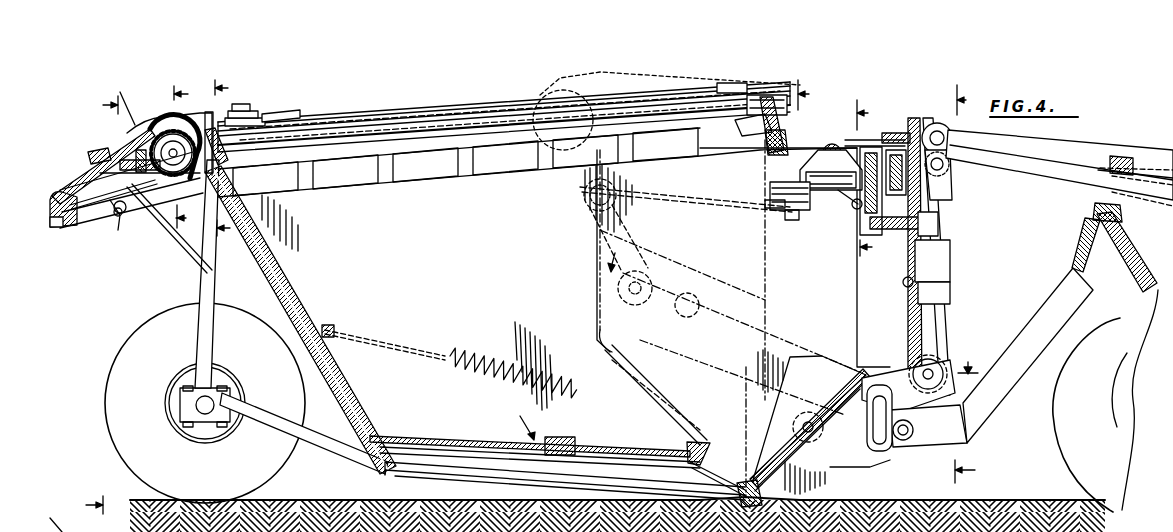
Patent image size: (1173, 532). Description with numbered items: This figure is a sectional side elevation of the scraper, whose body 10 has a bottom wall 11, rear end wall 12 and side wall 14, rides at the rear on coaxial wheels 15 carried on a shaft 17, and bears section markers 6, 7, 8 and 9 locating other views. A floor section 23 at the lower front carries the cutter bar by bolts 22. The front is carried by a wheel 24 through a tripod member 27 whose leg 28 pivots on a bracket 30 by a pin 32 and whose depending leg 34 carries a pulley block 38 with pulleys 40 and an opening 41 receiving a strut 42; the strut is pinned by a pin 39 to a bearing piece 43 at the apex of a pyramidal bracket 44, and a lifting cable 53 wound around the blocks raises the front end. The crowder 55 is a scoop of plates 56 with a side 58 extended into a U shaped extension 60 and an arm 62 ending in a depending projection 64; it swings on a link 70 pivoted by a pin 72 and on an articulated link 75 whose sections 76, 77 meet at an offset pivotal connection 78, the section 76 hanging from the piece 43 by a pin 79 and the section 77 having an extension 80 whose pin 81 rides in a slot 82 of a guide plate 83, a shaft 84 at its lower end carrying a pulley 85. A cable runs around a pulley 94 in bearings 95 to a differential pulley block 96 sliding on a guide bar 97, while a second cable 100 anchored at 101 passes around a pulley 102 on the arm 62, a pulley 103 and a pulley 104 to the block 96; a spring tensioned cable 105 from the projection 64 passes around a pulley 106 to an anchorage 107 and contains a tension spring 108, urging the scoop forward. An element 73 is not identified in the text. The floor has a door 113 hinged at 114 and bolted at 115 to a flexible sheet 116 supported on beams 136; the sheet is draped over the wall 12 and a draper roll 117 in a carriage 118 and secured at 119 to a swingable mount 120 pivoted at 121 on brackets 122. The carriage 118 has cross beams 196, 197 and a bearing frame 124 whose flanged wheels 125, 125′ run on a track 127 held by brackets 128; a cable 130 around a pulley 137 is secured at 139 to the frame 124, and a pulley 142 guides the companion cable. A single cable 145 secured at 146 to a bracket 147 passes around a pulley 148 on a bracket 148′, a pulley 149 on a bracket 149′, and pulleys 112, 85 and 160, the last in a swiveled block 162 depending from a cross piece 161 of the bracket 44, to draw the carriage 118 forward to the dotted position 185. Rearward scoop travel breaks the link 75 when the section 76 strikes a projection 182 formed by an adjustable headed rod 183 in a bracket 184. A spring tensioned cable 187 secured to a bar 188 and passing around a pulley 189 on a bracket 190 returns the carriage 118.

The section line 6- 6 is at (227, 159).
The section line 7- 7 is at (186, 158).
The section line 8- 8 is at (807, 95).
The section line 9- 9 is at (971, 282).
The scraper body 10 is at (288, 264).
The bottom wall 11 is at (749, 338).
The end wall 12 is at (297, 312).
The side wall 14 is at (518, 251).
The coaxial wheels 15 is at (120, 352).
The shaft 17 is at (84, 313).
The bolts 22 is at (745, 480).
The floor section 23 is at (706, 456).
The wheel 24 is at (1064, 433).
The tripod member 27 is at (1082, 250).
The leg 28 is at (1026, 330).
The bracket 30 is at (893, 450).
The pin 32 is at (912, 438).
The depending leg 34 is at (1137, 263).
The pulley block 38 is at (1120, 156).
The pin 39 is at (952, 132).
The pulleys 40 is at (1104, 172).
The enlarged opening 41 is at (1094, 210).
The strut 42 is at (1040, 174).
The bearing piece 43 is at (936, 122).
The pyramidal bracket member 44 is at (840, 132).
The lifting cable 53 is at (1150, 183).
The crowder 55 is at (827, 368).
The plates 56 is at (762, 476).
The side 58 is at (810, 357).
The U shaped extension 60 is at (958, 391).
The rearwardly extending arm 62 is at (767, 305).
The depending projection 64 is at (598, 307).
The link 70 is at (766, 262).
The pin 72 is at (856, 212).
The roller 73 is at (702, 300).
The articulated link 75 is at (950, 264).
The link section 76 is at (946, 232).
The link section 77 is at (951, 300).
The offset pivotal connection 78 is at (903, 284).
The pin 79 is at (946, 166).
The extension 80 is at (900, 366).
The pin 81 is at (876, 393).
The slot 82 is at (906, 412).
The guide plate 83 is at (870, 455).
The shaft 84 is at (946, 381).
The pulley 85 is at (943, 366).
The pulley 94 is at (770, 194).
The bearings 95 is at (778, 180).
The traveling differential pulley block 96 is at (850, 207).
The guide bar 97 is at (830, 144).
The second cable 100 is at (703, 196).
The securing point 101 is at (625, 238).
The rotatable pulley 102 is at (655, 276).
The pulley 103 is at (586, 193).
The pulley 104 is at (770, 211).
The spring tensioned cable 105 is at (695, 370).
The pulley 106 is at (810, 410).
The securing point 107 is at (345, 330).
The tension spring 108 is at (477, 355).
The pulley 112 is at (912, 116).
The door 113 is at (638, 446).
The hinge 114 is at (690, 467).
The bolts 115 is at (556, 454).
The flexible sheet 116 is at (394, 437).
The draper roll 117 is at (216, 180).
The carriage 118 is at (150, 122).
The securing point 119 is at (50, 203).
The swingable mount 120 is at (85, 228).
The pivot 121 is at (115, 217).
The brackets 122 is at (172, 235).
The bearing frame 124 is at (208, 110).
The flanged wheels 125 is at (132, 148).
The flanged wheels 125′ is at (214, 158).
The track 127 is at (353, 165).
The brackets 128 is at (462, 175).
The cable 130 is at (320, 126).
The beams 136 is at (455, 470).
The third pulley 137 is at (786, 97).
The securing point 139 is at (278, 116).
The pulley 142 is at (750, 124).
The single cable 145 is at (666, 100).
The securing point 146 is at (757, 95).
The bracket 147 is at (785, 125).
The pulley 148 is at (252, 112).
The bracket 148′ is at (244, 104).
The pulley 149 is at (734, 82).
The bracket 149′ is at (722, 96).
The pulley 160 is at (895, 130).
The cross piece 161 is at (860, 100).
The swiveled block 162 is at (948, 196).
The projection 182 is at (939, 222).
The threadably adjustable headed rod 183 is at (900, 216).
The bracket 184 is at (905, 280).
The dotted lines 185 is at (563, 80).
The spring tensioned cable 187 is at (92, 172).
The bar 188 is at (90, 157).
The pulley 189 is at (117, 187).
The bracket 190 is at (114, 216).
The cross beam 196 is at (119, 100).
The cross beam 197 is at (214, 114).